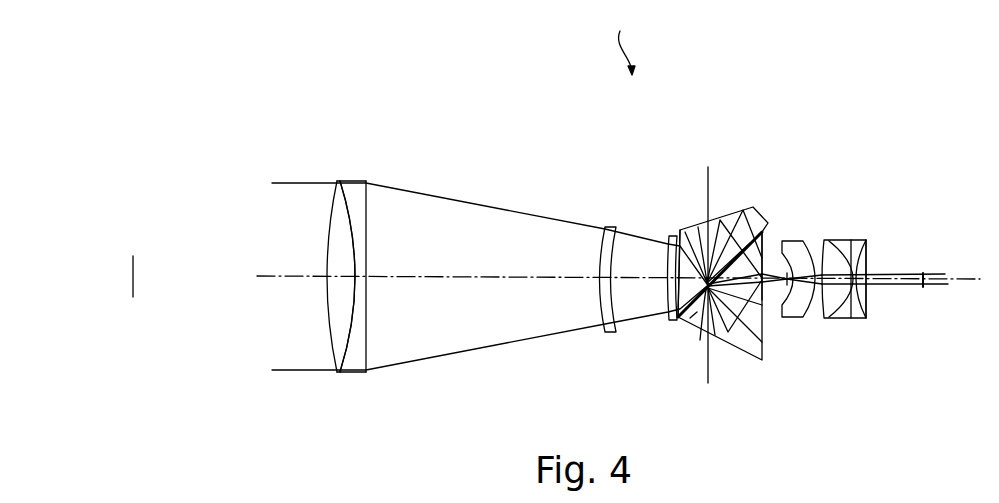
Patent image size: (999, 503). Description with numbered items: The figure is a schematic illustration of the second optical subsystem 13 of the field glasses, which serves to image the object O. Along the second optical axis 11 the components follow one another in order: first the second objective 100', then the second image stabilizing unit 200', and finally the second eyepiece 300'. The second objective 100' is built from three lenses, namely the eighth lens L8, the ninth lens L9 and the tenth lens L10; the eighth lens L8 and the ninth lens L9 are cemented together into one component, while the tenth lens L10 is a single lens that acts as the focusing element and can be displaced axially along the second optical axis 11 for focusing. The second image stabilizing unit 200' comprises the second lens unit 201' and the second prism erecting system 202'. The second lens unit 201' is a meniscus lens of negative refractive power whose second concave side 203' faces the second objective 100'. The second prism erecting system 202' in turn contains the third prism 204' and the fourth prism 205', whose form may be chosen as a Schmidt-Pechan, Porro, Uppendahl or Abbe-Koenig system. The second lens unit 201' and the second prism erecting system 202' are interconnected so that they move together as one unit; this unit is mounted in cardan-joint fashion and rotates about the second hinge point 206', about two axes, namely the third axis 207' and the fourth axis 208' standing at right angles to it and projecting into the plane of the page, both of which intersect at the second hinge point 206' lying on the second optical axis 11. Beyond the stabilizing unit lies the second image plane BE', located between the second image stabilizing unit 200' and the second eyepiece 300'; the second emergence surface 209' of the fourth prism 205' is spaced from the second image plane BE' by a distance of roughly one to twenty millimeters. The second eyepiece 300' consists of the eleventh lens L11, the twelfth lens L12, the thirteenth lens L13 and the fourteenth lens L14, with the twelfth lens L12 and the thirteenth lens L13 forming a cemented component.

The object O is at (133, 257).
The second optical axis 11 is at (268, 276).
The second optical subsystem 13 is at (621, 42).
The second objective 100' is at (431, 253).
The eighth lens L8 is at (327, 330).
The ninth lens L9 is at (353, 360).
The tenth lens L10 is at (605, 331).
The second image stabilizing unit 200' is at (743, 237).
The second prism erecting system 202' is at (743, 237).
The second lens unit 201' is at (646, 229).
The second concave side 203' is at (632, 256).
The third prism 204' is at (745, 230).
The fourth prism 205' is at (723, 332).
The second hinge point 206' is at (680, 355).
The third axis 207' is at (676, 200).
The fourth axis 208' is at (662, 351).
The second emergence surface 209' is at (831, 204).
The second image plane BE' is at (790, 339).
The second eyepiece 300' is at (867, 225).
The eleventh lens L11 is at (798, 318).
The twelfth lens L12 is at (824, 240).
The thirteenth lens L13 is at (845, 316).
The fourteenth lens L14 is at (868, 240).